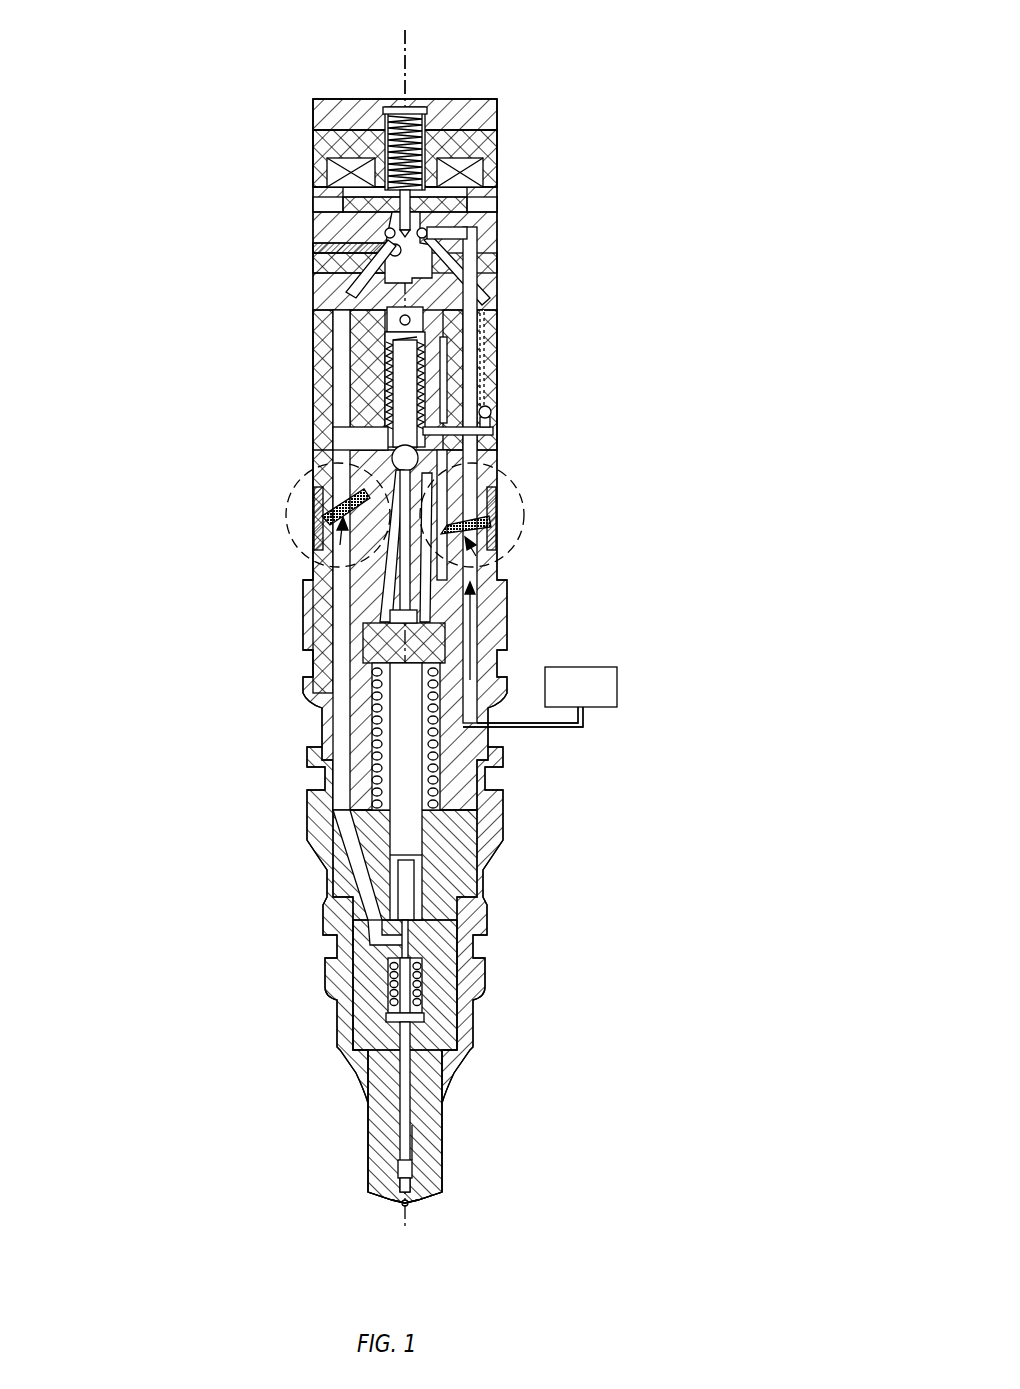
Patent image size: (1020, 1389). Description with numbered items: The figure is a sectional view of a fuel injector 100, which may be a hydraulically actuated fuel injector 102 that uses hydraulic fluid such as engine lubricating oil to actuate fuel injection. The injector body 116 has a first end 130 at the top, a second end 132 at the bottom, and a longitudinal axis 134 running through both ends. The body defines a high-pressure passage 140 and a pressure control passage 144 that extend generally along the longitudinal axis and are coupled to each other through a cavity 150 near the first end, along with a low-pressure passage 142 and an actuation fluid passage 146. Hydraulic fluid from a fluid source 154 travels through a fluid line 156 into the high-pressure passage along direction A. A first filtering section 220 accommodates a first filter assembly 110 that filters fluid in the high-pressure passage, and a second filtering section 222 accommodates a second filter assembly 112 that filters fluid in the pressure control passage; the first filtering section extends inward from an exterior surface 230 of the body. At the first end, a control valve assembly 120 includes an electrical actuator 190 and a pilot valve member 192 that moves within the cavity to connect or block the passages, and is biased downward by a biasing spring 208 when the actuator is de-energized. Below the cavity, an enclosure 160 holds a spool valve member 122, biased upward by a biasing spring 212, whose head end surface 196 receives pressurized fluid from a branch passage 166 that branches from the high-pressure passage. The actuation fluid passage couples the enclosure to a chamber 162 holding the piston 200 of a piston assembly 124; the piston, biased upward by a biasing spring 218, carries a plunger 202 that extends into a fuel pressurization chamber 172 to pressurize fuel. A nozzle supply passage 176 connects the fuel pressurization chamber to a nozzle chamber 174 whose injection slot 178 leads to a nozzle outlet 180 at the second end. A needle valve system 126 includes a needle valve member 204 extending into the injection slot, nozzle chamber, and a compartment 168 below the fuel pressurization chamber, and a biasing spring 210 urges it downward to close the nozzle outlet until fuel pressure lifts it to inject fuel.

The fuel injector 100 is at (689, 127).
The hydraulically actuated fuel injector 102 is at (655, 237).
The first filter assembly 110 is at (498, 560).
The second filter assembly 112 is at (316, 548).
The injector body 116 is at (508, 594).
The control valve assembly 120 is at (505, 148).
The spool valve member 122 is at (440, 395).
The piston assembly 124 is at (340, 700).
The needle valve system 126 is at (425, 1117).
The first end 130 is at (505, 118).
The second end 132 is at (442, 1203).
The longitudinal axis 134 is at (407, 62).
The high-pressure passage 140 is at (500, 652).
The low-pressure passage 142 is at (330, 290).
The pressure control passage 144 is at (345, 606).
The actuation fluid passage 146 is at (447, 352).
The cavity 150 is at (320, 242).
The fluid source 154 is at (617, 677).
The fluid line 156 is at (535, 730).
The enclosure 160 is at (380, 323).
The chamber 162 is at (352, 706).
The branch passage 166 is at (470, 300).
The compartment 168 is at (390, 984).
The fuel pressurization chamber 172 is at (415, 872).
The nozzle chamber 174 is at (388, 1057).
The nozzle supply passage 176 is at (425, 1010).
The injection slot 178 is at (395, 1128).
The nozzle outlet 180 is at (412, 1200).
The electrical actuator 190 is at (320, 182).
The pilot valve member 192 is at (428, 218).
The head end surface 196 is at (425, 320).
The piston 200 is at (390, 617).
The plunger 202 is at (380, 830).
The needle valve member 204 is at (423, 1136).
The biasing spring 208 is at (443, 113).
The biasing spring 210 is at (425, 977).
The biasing spring 212 is at (388, 396).
The biasing spring 218 is at (440, 783).
The first filtering section 220 is at (533, 491).
The second filtering section 222 is at (280, 494).
The exterior surface 230 is at (497, 468).
The direction A is at (500, 622).